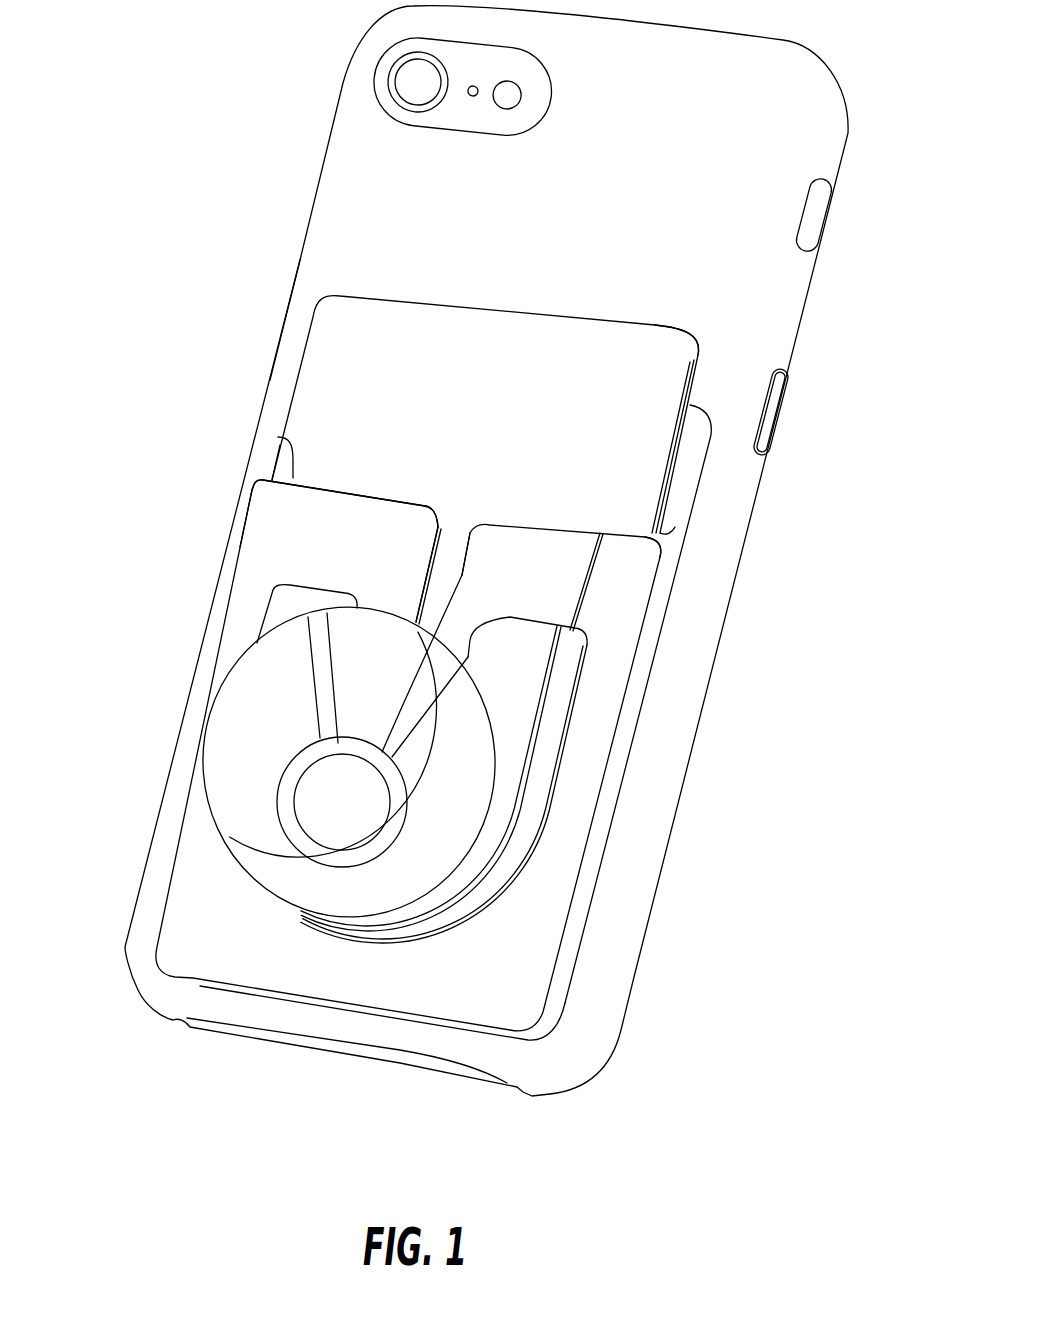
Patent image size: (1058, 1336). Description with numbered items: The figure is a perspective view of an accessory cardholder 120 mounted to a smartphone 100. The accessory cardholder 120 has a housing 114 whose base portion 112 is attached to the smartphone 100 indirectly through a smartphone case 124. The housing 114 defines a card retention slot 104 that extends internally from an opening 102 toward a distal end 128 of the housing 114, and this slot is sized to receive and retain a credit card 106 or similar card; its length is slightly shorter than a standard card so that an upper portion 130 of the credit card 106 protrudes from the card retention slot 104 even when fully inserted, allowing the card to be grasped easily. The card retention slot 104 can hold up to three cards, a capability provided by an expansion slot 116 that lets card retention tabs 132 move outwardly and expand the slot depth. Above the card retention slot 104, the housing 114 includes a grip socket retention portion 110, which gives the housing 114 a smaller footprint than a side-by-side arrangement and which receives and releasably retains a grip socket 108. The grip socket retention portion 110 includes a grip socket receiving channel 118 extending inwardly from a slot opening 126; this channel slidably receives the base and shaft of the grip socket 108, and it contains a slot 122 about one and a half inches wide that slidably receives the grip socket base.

The smartphone 100 is at (307, 124).
The opening 102 is at (327, 485).
The card retention slot 104 is at (292, 480).
The credit card 106 is at (670, 365).
The grip socket 108 is at (201, 806).
The grip socket retention portion 110 is at (509, 759).
The base portion 112 is at (595, 906).
The housing 114 is at (151, 543).
The expansion slot 116 is at (420, 577).
The grip socket receiving channel 118 is at (475, 615).
The accessory cardholder 120 is at (820, 556).
The slot 122 is at (565, 616).
The smartphone case 124 is at (285, 390).
The slot opening 126 is at (650, 530).
The distal end 128 is at (503, 1002).
The upper portion 130 is at (457, 337).
The card retention tabs 132 is at (383, 517).